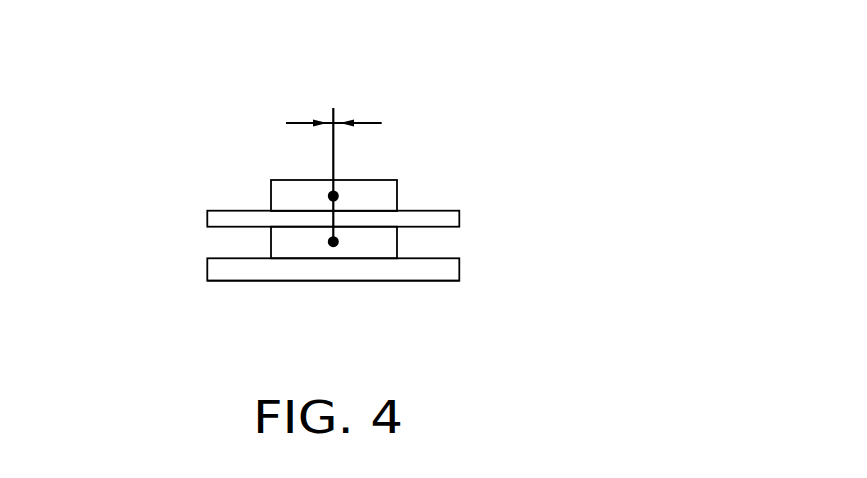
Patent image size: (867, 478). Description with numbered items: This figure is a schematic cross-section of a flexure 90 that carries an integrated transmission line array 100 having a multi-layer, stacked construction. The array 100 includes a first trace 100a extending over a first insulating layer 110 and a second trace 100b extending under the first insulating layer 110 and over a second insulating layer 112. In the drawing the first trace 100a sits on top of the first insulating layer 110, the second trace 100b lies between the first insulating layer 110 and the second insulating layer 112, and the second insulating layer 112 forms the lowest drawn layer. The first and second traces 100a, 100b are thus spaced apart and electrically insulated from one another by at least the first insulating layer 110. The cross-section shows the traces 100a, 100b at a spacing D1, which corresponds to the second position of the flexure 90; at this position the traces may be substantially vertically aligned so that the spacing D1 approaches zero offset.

The package / assembly 100 is at (640, 103).
The upper portion of package 100a is at (415, 183).
The lower portion of package 100b is at (415, 238).
The upper plate 110 is at (470, 216).
The lower plate 112 is at (469, 270).
The base / substrate 90 is at (175, 274).
The distance D1 is at (295, 121).